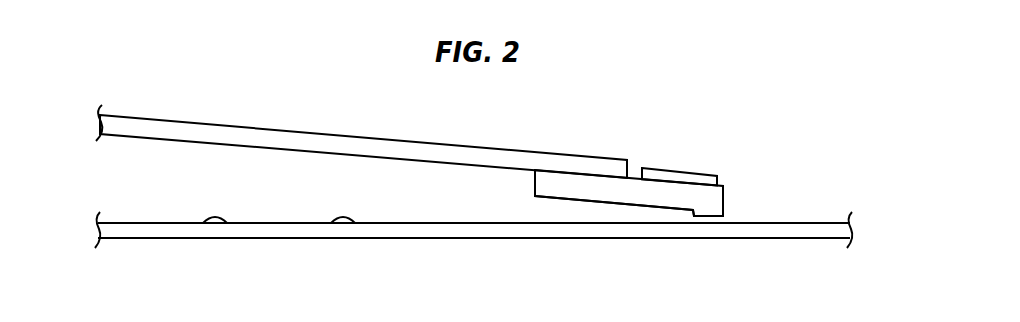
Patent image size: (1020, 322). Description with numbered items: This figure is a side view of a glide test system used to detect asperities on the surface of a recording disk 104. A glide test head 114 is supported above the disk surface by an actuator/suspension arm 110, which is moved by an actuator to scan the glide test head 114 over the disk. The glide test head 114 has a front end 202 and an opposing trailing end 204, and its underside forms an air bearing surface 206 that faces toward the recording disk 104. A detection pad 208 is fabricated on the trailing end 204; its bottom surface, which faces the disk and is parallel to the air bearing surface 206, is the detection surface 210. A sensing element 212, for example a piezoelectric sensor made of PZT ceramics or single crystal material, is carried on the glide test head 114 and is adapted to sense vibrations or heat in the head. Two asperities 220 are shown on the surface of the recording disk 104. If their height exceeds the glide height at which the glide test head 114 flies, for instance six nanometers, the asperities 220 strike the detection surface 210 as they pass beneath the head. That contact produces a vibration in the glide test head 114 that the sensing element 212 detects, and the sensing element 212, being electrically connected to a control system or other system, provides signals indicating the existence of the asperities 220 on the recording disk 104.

The actuator/suspension arm 110 is at (320, 137).
The recording disk 104 is at (473, 232).
The asperities 220 is at (334, 205).
The front end 202 is at (522, 183).
The sensing element 212 is at (689, 173).
The trailing end 204 is at (741, 195).
The air bearing surface 206 is at (582, 208).
The detection pad 208 is at (735, 214).
The detection surface 210 is at (712, 224).
The glide test head 114 is at (630, 190).